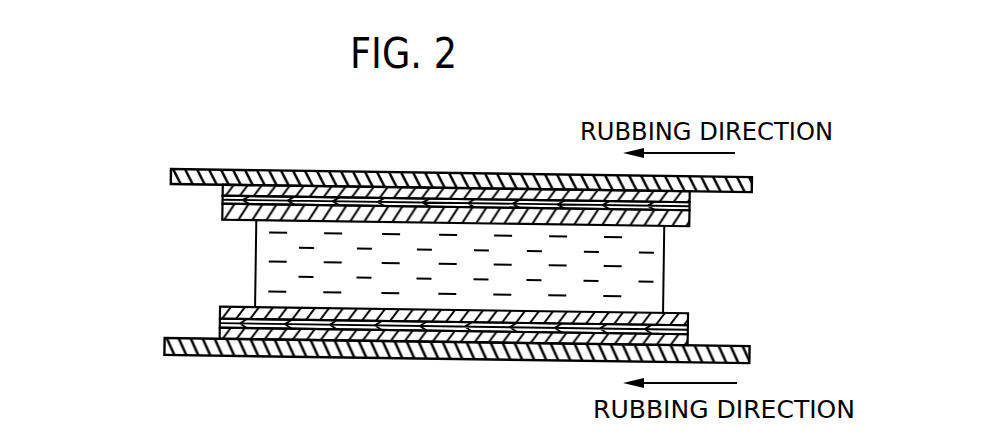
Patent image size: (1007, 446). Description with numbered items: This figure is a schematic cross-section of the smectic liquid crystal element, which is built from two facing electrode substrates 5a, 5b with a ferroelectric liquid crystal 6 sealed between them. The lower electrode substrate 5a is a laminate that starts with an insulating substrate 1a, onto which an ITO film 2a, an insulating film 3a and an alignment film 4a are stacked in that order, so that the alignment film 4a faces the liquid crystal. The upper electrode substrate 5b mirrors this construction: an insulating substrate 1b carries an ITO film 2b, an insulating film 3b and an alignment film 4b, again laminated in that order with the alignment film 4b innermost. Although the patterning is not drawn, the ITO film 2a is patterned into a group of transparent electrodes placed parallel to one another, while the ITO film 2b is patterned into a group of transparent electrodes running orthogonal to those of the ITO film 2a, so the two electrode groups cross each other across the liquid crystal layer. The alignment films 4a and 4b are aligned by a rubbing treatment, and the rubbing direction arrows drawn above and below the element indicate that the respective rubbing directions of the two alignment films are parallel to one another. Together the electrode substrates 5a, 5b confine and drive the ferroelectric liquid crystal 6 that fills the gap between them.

The insulating substrate 1a is at (752, 355).
The insulating substrate 1b is at (173, 180).
The ITO film 2a is at (693, 341).
The ITO film 2b is at (224, 189).
The insulating film 3a is at (693, 328).
The insulating film 3b is at (222, 200).
The alignment film 4a is at (693, 314).
The alignment film 4b is at (222, 212).
The electrode substrate 5a is at (817, 252).
The electrode substrate 5b is at (106, 143).
The ferroelectric liquid crystal 6 is at (260, 263).